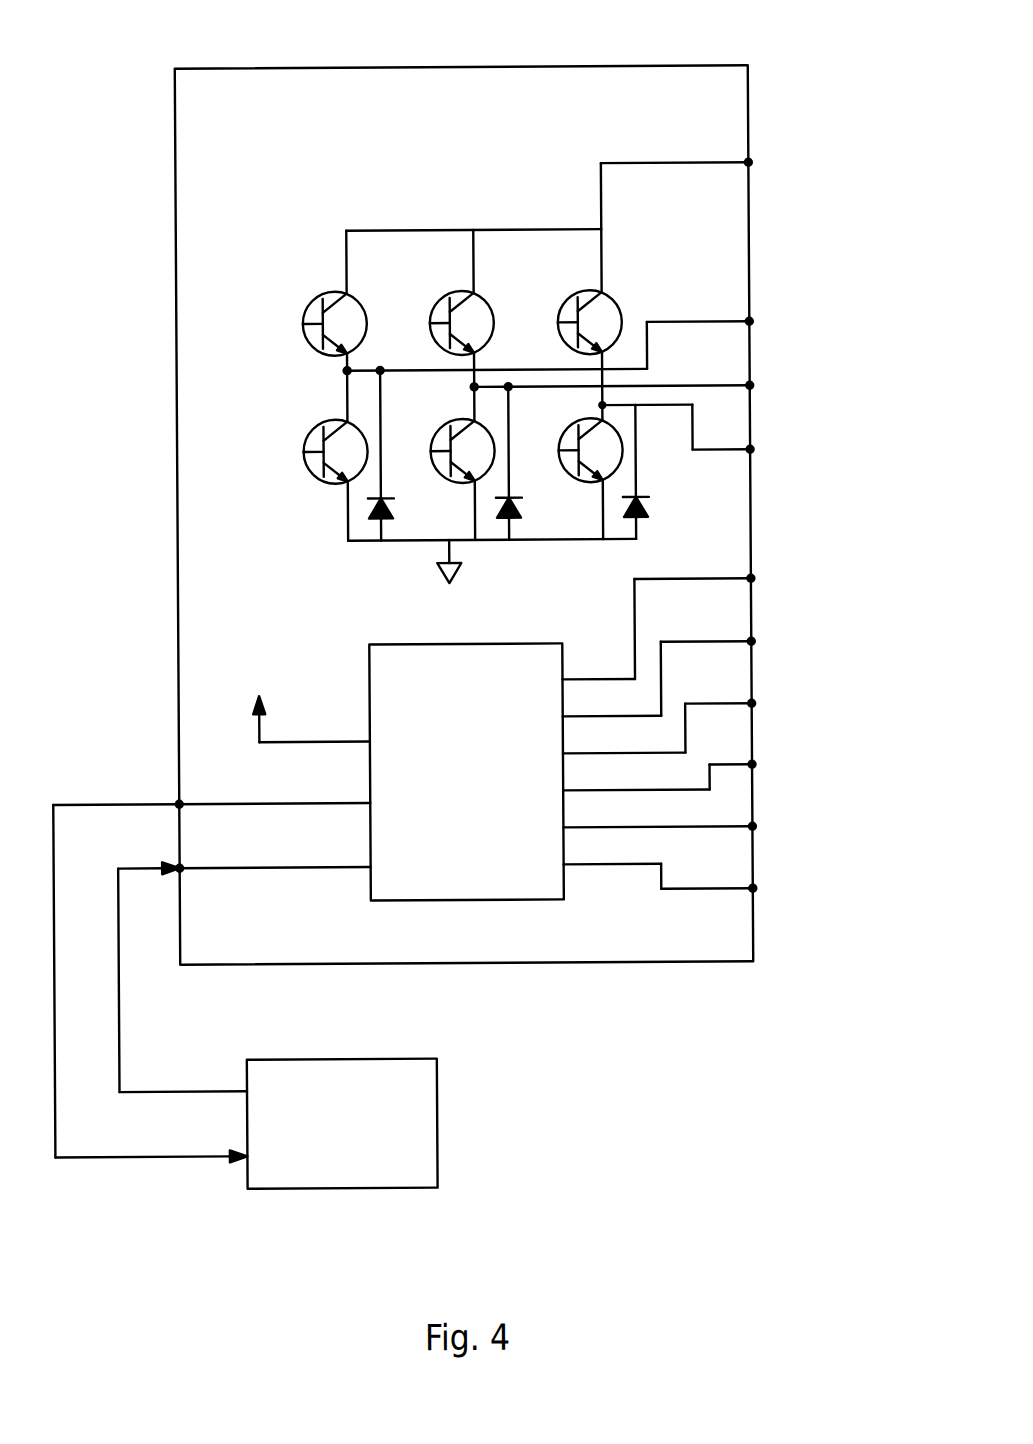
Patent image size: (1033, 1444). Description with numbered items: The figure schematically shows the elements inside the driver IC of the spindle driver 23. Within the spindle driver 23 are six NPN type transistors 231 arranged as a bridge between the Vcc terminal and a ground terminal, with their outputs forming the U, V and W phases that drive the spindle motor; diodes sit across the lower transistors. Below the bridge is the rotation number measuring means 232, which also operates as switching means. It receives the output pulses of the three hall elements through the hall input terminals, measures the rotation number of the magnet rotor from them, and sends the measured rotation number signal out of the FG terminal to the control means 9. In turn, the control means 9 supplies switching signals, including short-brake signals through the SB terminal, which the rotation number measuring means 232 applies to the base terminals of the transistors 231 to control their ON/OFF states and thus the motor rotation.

The spindle driver 23 is at (489, 486).
The NPN type transistors (switching elements) 231 is at (652, 249).
The rotation number measuring means (switching means) 232 is at (498, 644).
The control means 9 is at (434, 1110).